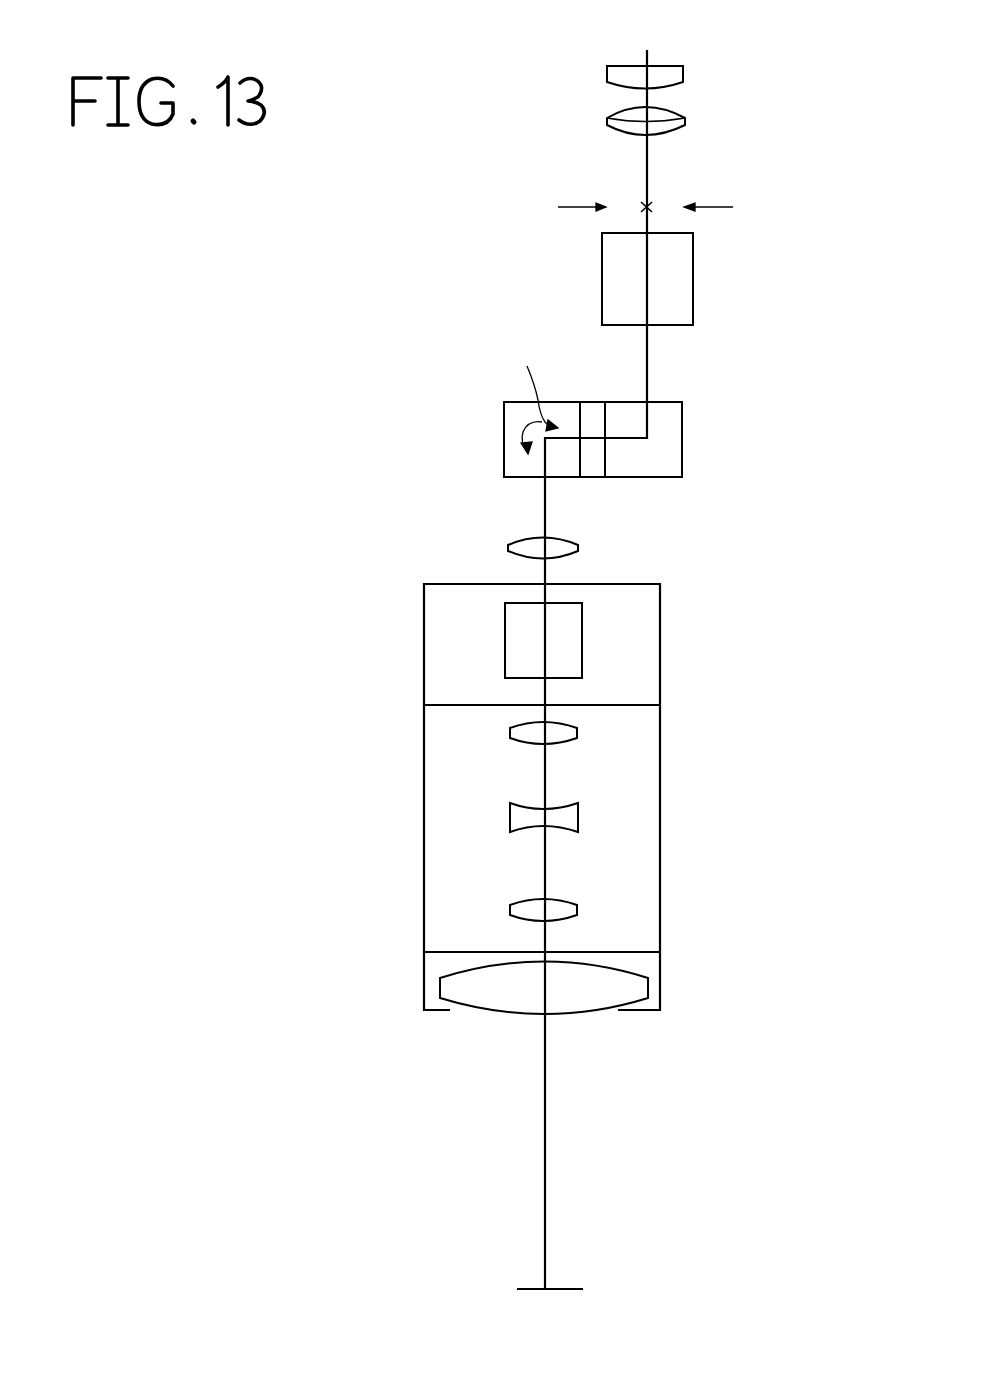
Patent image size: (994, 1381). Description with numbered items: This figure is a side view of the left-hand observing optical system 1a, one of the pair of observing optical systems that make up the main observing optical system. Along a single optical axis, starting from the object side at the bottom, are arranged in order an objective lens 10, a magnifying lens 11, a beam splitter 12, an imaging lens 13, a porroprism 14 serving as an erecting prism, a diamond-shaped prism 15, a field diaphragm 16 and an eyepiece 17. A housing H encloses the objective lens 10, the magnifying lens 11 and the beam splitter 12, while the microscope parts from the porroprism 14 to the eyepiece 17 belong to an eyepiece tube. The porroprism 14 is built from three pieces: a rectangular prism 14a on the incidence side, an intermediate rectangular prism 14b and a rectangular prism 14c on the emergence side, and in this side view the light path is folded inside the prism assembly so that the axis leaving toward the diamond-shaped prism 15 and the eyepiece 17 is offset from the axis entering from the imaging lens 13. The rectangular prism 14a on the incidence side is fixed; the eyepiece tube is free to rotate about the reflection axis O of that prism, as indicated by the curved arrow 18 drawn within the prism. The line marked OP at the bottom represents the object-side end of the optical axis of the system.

The left-hand observing optical system 1a is at (647, 57).
The eyepiece 17 is at (696, 55).
The field diaphragm 16 is at (728, 172).
The diamond-shaped prism 15 is at (693, 270).
The porroprism 14 is at (596, 441).
The rectangular prism on the incidence side 14a is at (504, 446).
The intermediate rectangular prism 14b is at (592, 477).
The rectangular prism on the emergence side 14c is at (682, 446).
The arrow 18 is at (533, 391).
The reflection axis O is at (546, 442).
The imaging lens 13 is at (578, 548).
The housing H is at (660, 740).
The beam splitter 12 is at (582, 645).
The magnifying lens 11 is at (586, 712).
The objective lens 10 is at (468, 1005).
The object plane OP is at (563, 1289).